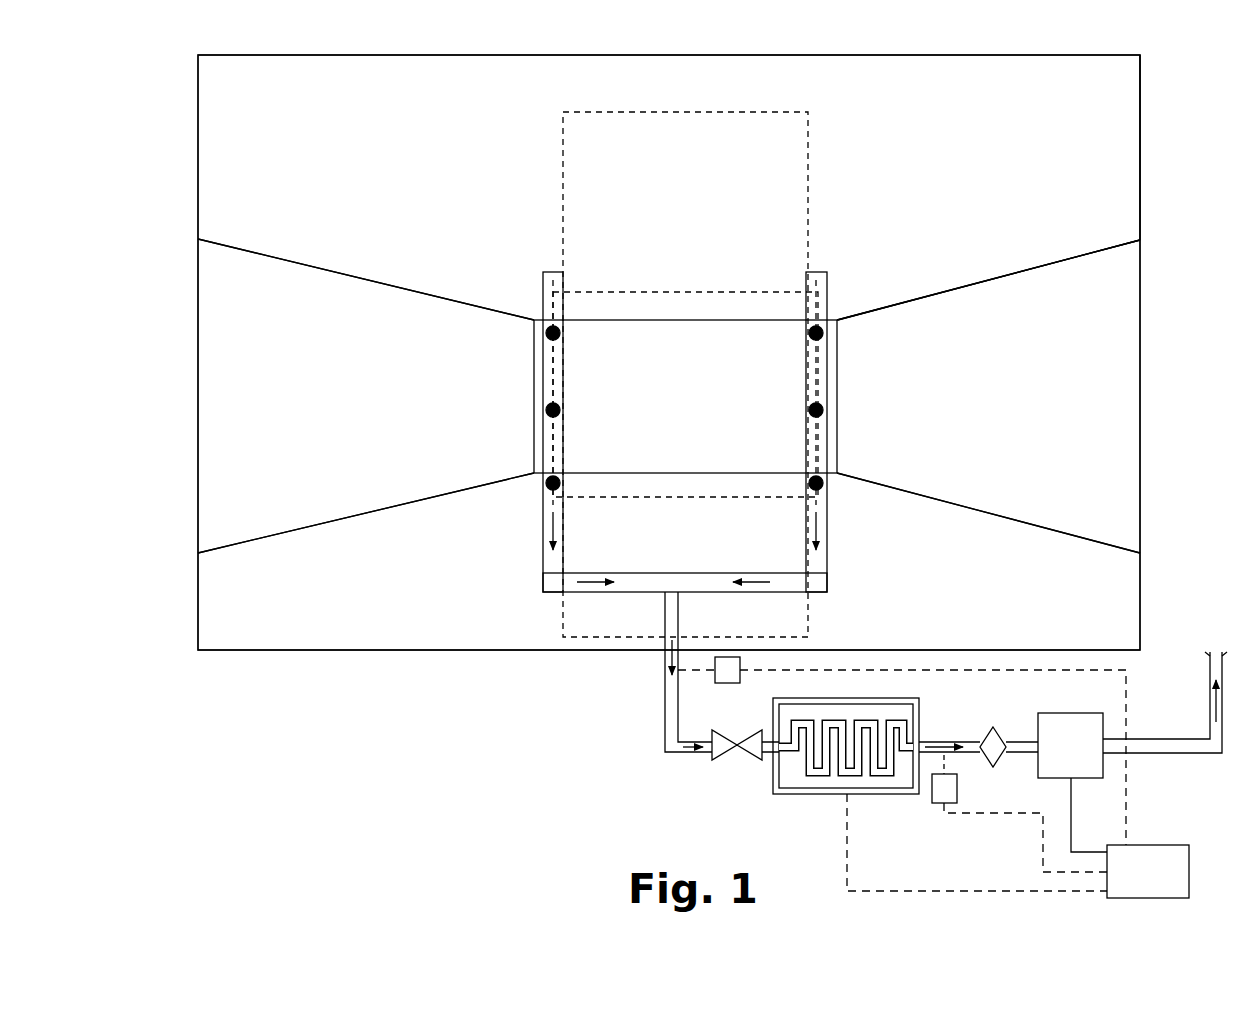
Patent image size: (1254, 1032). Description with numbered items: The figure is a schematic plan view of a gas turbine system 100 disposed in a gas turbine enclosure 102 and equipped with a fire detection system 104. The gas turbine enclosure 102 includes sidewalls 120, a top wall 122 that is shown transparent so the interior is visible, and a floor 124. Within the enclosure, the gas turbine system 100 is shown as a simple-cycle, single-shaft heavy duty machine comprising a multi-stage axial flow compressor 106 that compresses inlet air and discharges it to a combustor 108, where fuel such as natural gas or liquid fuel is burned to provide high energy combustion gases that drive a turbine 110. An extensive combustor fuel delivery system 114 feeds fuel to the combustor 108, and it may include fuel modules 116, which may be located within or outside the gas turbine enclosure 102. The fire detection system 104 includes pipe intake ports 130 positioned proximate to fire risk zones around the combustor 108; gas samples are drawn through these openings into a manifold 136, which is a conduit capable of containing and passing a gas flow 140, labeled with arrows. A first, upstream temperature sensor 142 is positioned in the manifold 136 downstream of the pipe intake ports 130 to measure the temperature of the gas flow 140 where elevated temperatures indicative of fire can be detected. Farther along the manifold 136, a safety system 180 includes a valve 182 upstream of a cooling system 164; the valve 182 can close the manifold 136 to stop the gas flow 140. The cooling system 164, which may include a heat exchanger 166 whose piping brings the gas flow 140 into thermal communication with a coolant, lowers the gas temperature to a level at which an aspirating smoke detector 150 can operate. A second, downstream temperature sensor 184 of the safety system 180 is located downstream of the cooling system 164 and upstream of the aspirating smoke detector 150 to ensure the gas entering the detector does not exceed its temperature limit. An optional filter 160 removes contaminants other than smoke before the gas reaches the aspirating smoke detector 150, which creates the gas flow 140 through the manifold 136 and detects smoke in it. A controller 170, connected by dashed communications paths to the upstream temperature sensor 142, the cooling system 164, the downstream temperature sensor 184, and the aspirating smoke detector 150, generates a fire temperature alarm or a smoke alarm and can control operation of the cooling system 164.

The gas turbine system 100 is at (327, 535).
The gas turbine enclosure 102 is at (776, 55).
The fire detection system 104 is at (538, 600).
The compressor 106 is at (366, 396).
The combustor 108 is at (685, 396).
The turbine 110 is at (988, 396).
The combustor fuel delivery system 114 is at (670, 292).
The fuel modules 116 is at (808, 130).
The sidewalls 120 is at (940, 55).
The top wall 122 is at (1100, 215).
The floor 124 is at (989, 187).
The pipe intake port 130 is at (553, 483).
The manifold 136 is at (643, 582).
The gas flow 140 is at (588, 580).
The upstream temperature sensor 142 is at (727, 683).
The aspirating smoke detector 150 is at (1132, 752).
The filter 160 is at (993, 727).
The cooling system 164 is at (870, 782).
The heat exchanger 166 is at (880, 718).
The controller 170 is at (1148, 871).
The safety system 180 is at (932, 808).
The valve 182 is at (750, 758).
The downstream temperature sensor 184 is at (957, 788).